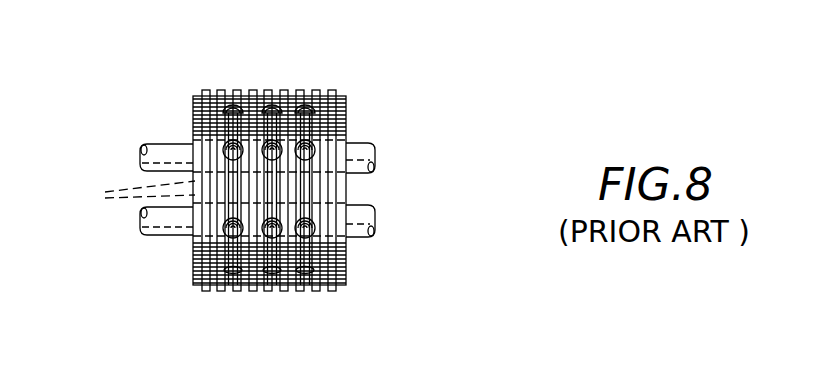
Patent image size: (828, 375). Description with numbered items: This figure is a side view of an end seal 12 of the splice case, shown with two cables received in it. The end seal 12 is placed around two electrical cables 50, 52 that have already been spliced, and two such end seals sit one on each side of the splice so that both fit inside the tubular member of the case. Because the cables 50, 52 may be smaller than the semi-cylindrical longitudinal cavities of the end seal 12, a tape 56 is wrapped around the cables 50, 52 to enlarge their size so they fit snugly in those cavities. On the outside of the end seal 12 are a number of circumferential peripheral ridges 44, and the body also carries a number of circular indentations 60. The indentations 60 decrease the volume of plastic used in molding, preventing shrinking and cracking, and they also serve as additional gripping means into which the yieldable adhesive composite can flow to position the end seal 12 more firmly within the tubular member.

The end seal 12 is at (350, 97).
The circumferential peripheral ridges 44 is at (219, 93).
The electrical cable 50 is at (362, 171).
The electrical cable 52 is at (355, 226).
The tape 56 is at (126, 192).
The circular indentations 60 is at (223, 150).